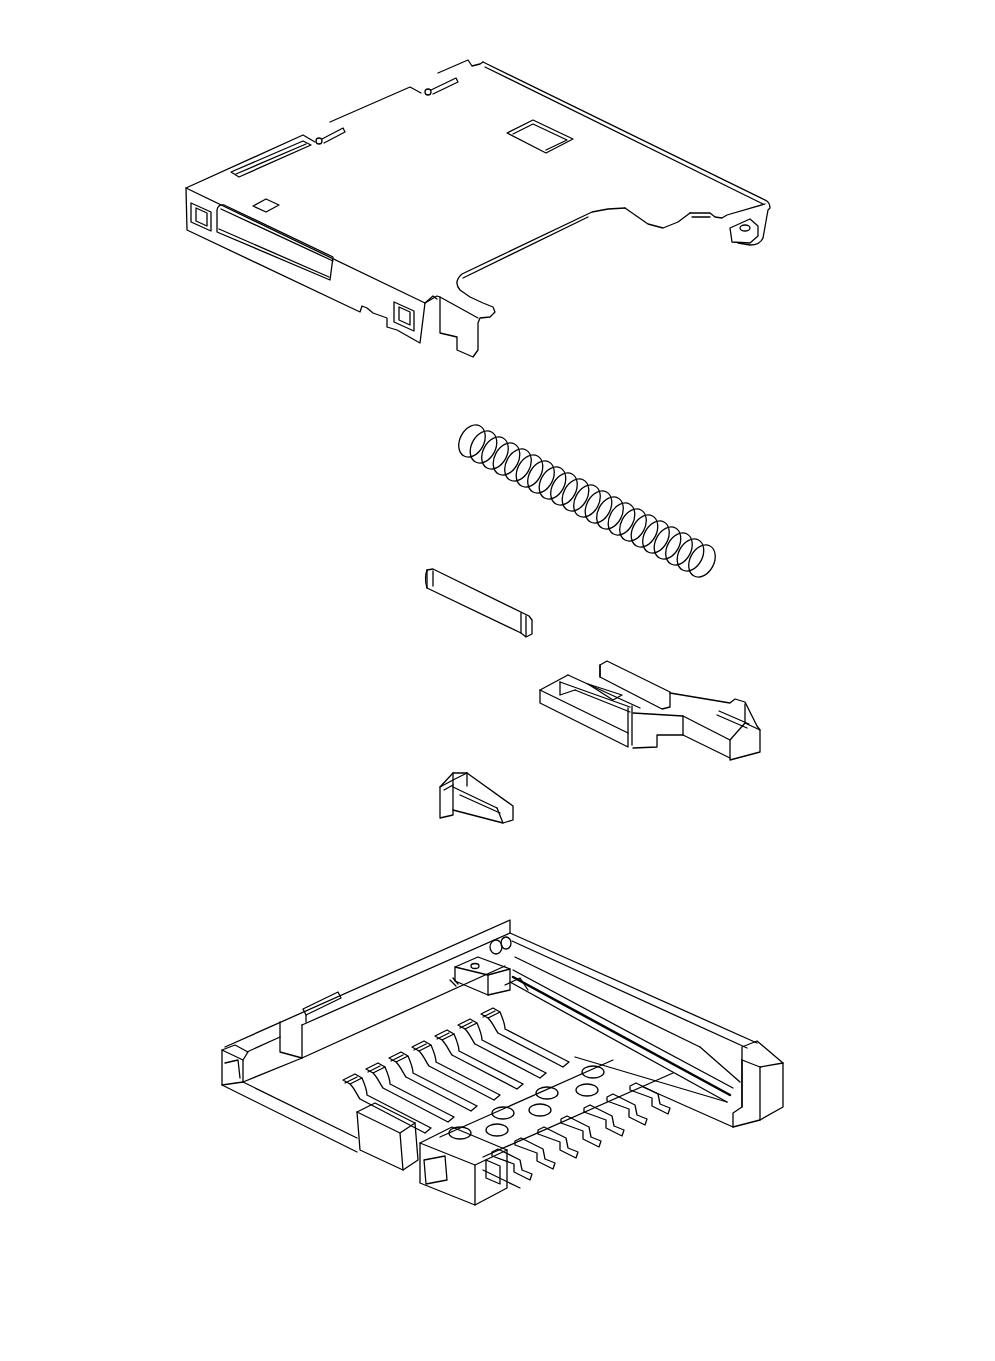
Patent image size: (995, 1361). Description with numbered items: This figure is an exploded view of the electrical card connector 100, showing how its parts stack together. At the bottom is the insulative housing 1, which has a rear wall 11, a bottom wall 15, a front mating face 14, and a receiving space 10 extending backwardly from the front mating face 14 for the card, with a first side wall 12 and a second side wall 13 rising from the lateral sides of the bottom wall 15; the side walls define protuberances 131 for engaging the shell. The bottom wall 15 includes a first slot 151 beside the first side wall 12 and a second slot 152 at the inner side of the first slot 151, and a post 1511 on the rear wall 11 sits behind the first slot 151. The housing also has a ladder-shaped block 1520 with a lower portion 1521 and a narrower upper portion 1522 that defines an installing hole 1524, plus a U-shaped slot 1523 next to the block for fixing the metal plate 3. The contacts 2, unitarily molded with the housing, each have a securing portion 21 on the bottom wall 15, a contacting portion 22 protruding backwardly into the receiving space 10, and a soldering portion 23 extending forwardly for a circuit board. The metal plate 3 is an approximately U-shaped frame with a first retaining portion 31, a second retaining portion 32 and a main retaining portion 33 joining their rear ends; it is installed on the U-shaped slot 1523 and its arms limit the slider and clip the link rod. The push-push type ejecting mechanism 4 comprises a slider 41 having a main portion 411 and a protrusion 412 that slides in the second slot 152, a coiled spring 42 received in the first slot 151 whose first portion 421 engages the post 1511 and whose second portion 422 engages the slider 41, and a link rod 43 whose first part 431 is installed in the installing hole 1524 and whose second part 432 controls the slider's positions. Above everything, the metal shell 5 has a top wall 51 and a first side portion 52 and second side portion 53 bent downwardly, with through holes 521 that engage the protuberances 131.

The electrical card connector 100 is at (140, 112).
The insulative housing 1 is at (327, 1007).
The receiving space 10 is at (680, 1117).
The rear wall 11 is at (368, 993).
The first side wall 12 is at (727, 1035).
The second side wall 13 is at (372, 1130).
The protuberance 131 is at (237, 1070).
The front mating face 14 is at (770, 1090).
The bottom wall 15 is at (562, 1135).
The first slot 151 is at (680, 1040).
The second slot 152 is at (637, 1057).
The post 1511 is at (500, 932).
The ladder-shaped block 1520 is at (588, 972).
The lower portion 1521 is at (513, 987).
The upper portion 1522 is at (458, 980).
The U-shaped slot 1523 is at (455, 982).
The installing hole 1524 is at (475, 968).
The contacts 2 is at (417, 1173).
The securing portion 21 is at (507, 1185).
The contacting portion 22 is at (360, 1068).
The soldering portion 23 is at (535, 1178).
The metal plate 3 is at (439, 757).
The first retaining portion 31 is at (492, 787).
The second retaining portion 32 is at (480, 811).
The main retaining portion 33 is at (450, 786).
The push-push type ejecting mechanism 4 is at (813, 527).
The slider 41 is at (673, 687).
The main portion 411 is at (722, 752).
The protrusion 412 is at (590, 683).
The coiled spring 42 is at (614, 477).
The first portion 421 is at (468, 428).
The second portion 422 is at (708, 567).
The link rod 43 is at (513, 580).
The first part 431 is at (430, 583).
The second part 432 is at (527, 632).
The metal shell 5 is at (624, 107).
The top wall 51 is at (432, 150).
The first side portion 52 is at (347, 292).
The through holes 521 is at (200, 217).
The second side portion 53 is at (578, 107).